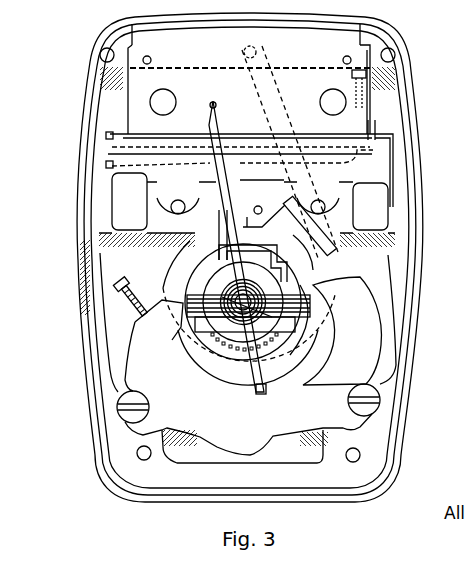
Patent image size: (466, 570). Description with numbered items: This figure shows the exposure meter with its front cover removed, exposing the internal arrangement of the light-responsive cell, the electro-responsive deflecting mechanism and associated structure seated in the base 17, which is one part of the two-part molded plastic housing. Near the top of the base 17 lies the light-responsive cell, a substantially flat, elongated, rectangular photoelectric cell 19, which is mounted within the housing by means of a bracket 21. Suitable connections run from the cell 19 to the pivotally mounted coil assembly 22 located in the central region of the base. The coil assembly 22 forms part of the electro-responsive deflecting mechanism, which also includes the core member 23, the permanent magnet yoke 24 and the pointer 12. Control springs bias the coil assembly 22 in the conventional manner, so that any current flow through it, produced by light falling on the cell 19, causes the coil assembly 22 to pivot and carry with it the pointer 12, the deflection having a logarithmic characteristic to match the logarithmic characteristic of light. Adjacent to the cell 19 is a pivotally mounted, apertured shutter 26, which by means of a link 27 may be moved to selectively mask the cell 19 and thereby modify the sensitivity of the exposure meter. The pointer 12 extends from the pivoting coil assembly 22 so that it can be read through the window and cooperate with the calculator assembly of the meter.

The pointer 12 is at (222, 121).
The base 17 is at (404, 416).
The photoelectric cell 19 is at (143, 143).
The bracket 21 is at (120, 162).
The coil assembly 22 is at (311, 349).
The core member 23 is at (200, 323).
The permanent magnet yoke 24 is at (202, 386).
The apertured shutter 26 is at (204, 95).
The link 27 is at (394, 202).